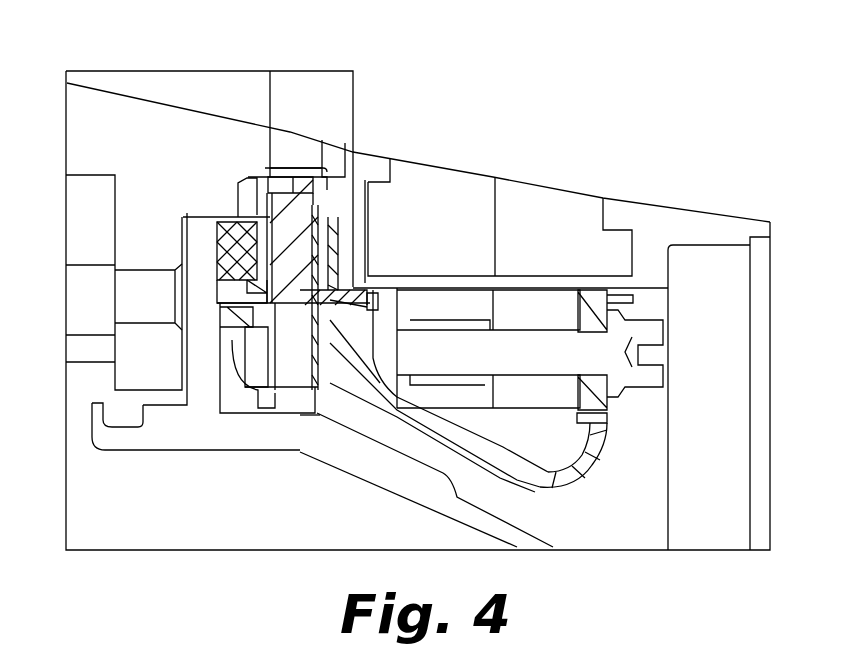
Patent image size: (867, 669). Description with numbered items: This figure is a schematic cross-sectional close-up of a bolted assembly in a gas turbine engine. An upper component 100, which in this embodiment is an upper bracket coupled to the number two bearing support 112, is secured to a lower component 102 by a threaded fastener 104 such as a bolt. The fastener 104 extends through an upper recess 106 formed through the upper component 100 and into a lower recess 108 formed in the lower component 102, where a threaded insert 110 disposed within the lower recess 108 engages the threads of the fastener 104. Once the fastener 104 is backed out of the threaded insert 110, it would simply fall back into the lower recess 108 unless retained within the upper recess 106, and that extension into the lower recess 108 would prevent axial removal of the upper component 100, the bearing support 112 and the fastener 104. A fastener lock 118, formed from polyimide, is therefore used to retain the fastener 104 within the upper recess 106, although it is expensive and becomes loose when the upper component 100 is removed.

The upper component 100 is at (244, 177).
The lower component 102 is at (357, 325).
The threaded fastener 104 is at (318, 195).
The upper recess 106 is at (320, 208).
The lower recess 108 is at (277, 382).
The threaded insert 110 is at (318, 412).
The number two bearing support 112 is at (200, 228).
The fastener lock 118 is at (220, 297).